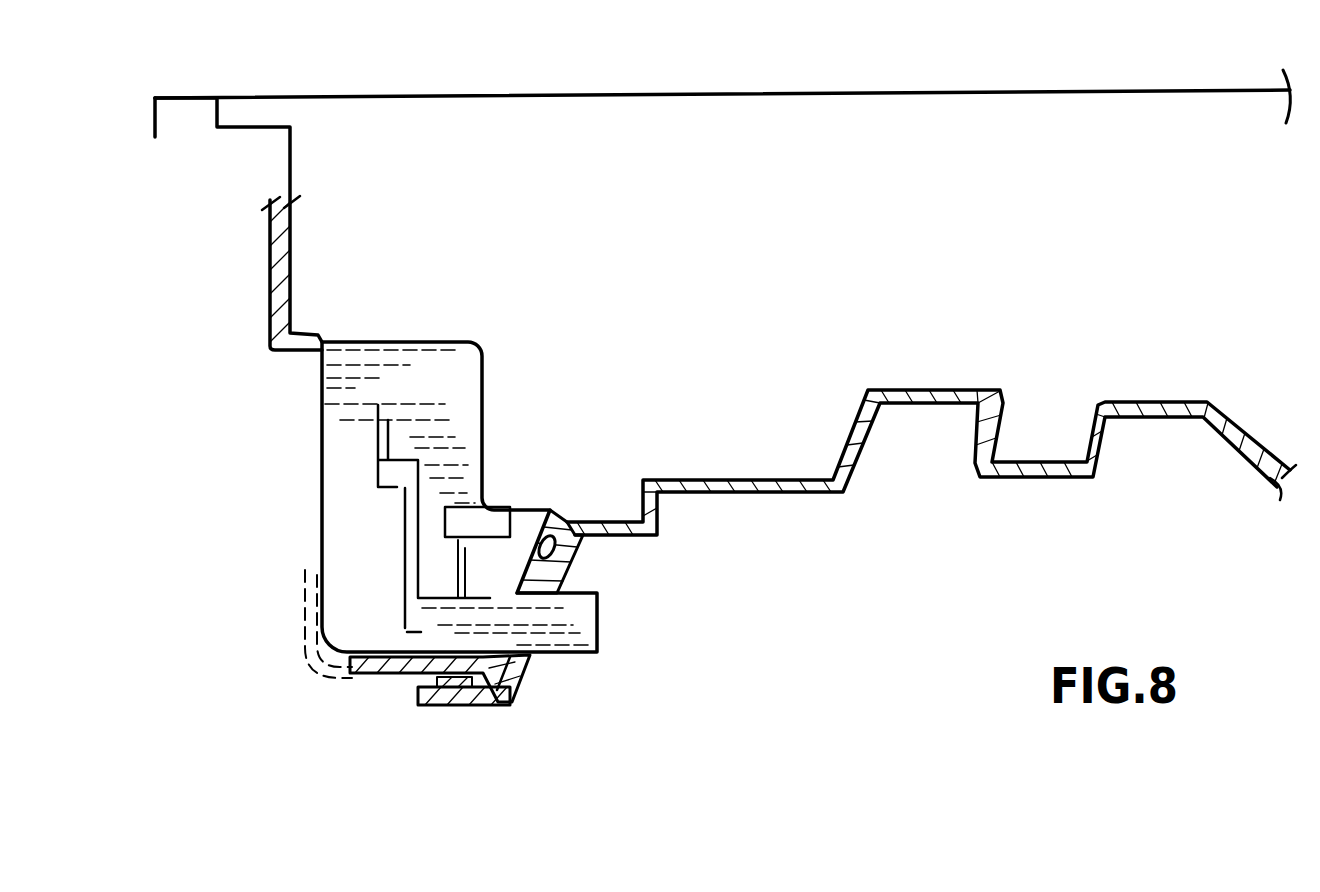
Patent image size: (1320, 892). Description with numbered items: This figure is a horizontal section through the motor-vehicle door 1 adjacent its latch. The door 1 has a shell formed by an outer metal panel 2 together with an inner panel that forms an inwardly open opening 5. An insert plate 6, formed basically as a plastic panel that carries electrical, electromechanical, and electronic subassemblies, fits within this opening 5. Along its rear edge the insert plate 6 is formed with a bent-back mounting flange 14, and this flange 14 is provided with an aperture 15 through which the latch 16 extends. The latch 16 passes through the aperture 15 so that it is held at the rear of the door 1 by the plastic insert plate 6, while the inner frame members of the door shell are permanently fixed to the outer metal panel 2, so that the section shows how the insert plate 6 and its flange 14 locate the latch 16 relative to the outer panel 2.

The motor-vehicle door 1 is at (250, 285).
The outer metal panel 2 is at (831, 96).
The opening 5 is at (470, 706).
The insert plate 6 is at (957, 393).
The bent-back mounting flange 14 is at (512, 682).
The aperture 15 is at (588, 579).
The latch 16 is at (420, 357).